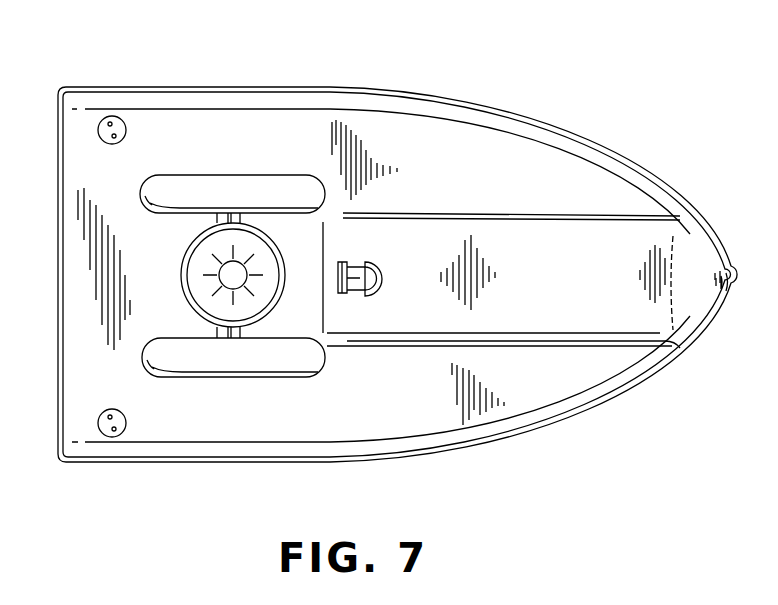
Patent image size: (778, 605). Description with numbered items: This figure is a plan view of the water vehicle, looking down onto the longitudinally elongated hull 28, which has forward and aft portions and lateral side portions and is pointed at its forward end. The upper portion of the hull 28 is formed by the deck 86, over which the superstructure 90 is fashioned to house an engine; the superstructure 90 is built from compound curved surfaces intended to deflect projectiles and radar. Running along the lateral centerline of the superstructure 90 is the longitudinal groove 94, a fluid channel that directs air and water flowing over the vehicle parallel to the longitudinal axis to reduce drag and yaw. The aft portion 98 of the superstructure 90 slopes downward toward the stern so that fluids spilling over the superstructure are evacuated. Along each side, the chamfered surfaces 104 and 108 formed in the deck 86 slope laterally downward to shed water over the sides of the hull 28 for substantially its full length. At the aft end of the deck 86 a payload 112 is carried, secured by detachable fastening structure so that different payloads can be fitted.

The hull 28 is at (643, 164).
The deck 86 is at (463, 145).
The superstructure 90 is at (603, 312).
The longitudinal groove 94 is at (588, 262).
The aft portion of the superstructure 98 is at (378, 248).
The chamfered surface 104 is at (377, 452).
The chamfered surface 108 is at (413, 105).
The payload 112 is at (219, 176).